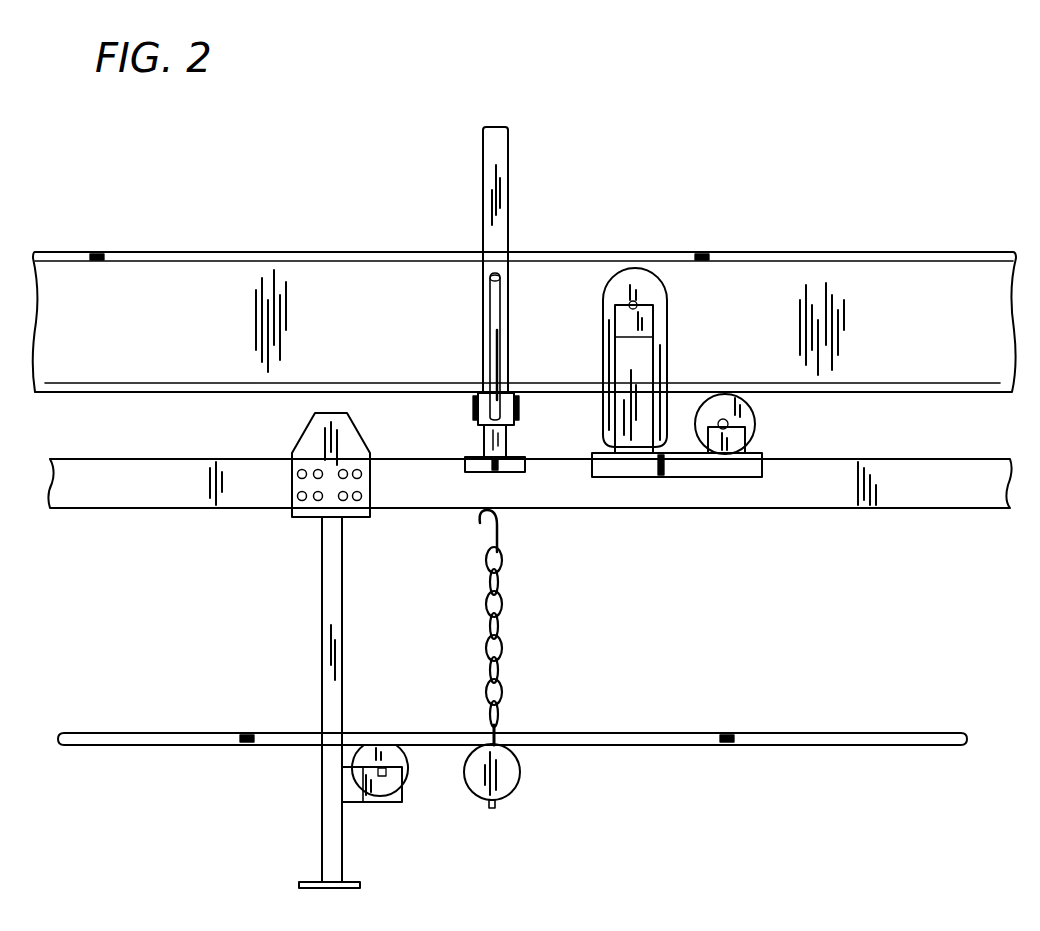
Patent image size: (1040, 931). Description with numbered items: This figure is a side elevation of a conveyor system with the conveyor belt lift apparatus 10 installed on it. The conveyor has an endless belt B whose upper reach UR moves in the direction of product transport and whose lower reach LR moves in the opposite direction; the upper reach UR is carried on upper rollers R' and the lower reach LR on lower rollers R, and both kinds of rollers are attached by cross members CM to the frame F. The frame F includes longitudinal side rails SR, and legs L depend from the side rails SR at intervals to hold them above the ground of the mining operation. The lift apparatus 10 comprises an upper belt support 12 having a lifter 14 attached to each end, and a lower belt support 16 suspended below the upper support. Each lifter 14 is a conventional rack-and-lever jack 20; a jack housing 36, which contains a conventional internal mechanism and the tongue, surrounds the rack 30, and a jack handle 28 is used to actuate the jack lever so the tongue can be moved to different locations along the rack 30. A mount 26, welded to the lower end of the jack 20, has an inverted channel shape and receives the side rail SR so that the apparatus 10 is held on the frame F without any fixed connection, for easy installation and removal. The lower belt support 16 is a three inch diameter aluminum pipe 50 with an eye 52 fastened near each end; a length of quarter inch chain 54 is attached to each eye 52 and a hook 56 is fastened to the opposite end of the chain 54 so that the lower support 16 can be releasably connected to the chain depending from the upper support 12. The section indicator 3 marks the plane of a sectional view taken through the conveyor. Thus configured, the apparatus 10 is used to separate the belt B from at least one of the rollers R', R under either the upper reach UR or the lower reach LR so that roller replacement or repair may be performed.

The conveyor belt lift apparatus 10 is at (500, 100).
The lifter 14 is at (508, 170).
The rack-and-lever jack 20 is at (483, 187).
The rack 30 is at (508, 218).
The jack handle 28 is at (488, 312).
The upper belt support 12 is at (472, 405).
The jack housing 36 is at (520, 408).
The mount 26 is at (480, 472).
The hook 56 is at (505, 530).
The chain 54 is at (505, 612).
The eye 52 is at (498, 730).
The aluminum pipe 50 is at (520, 765).
The lower belt support 16 is at (505, 798).
The section line 3- 3 is at (176, 290).
The upper reach UR is at (715, 252).
The lower reach LR is at (900, 748).
The side rails SR is at (112, 510).
The endless belt B is at (845, 252).
The upper rollers R' is at (720, 334).
The lower rollers R is at (414, 796).
The cross members CM is at (757, 477).
The frame F is at (655, 512).
The legs L is at (322, 604).